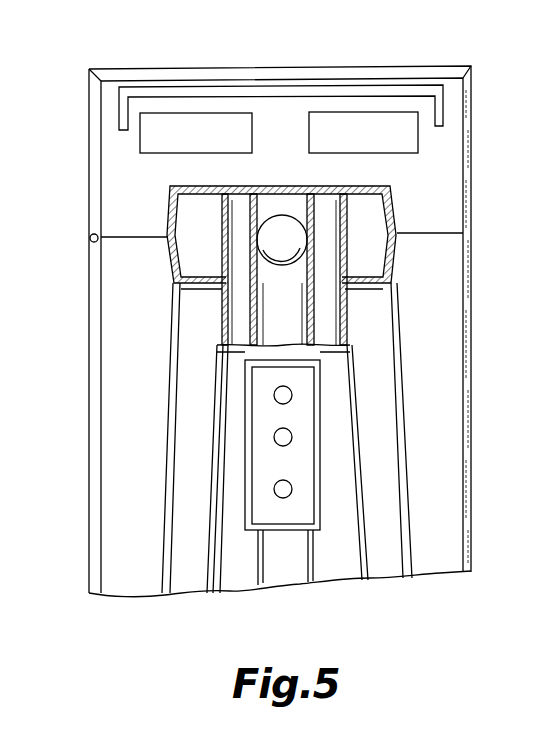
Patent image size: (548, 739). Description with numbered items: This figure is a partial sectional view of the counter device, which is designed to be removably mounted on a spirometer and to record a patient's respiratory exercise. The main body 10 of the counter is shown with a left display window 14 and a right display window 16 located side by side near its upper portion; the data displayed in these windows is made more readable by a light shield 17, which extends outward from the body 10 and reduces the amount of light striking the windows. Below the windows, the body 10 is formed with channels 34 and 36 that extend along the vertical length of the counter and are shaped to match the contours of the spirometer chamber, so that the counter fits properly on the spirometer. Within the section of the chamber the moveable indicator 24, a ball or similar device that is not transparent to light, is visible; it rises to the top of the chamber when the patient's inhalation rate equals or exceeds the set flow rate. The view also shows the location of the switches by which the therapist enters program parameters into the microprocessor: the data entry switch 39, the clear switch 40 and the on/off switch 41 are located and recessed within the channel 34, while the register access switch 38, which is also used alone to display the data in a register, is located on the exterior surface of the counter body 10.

The main body 10 is at (97, 329).
The left display window 14 is at (212, 127).
The right display window 16 is at (380, 120).
The light shield 17 is at (290, 88).
The moveable indicator 24 is at (283, 225).
The channel 34 is at (260, 362).
The channel 36 is at (228, 428).
The register access switch 38 is at (89, 239).
The data entry switch 39 is at (292, 394).
The clear switch 40 is at (292, 437).
The on/off switch 41 is at (292, 489).